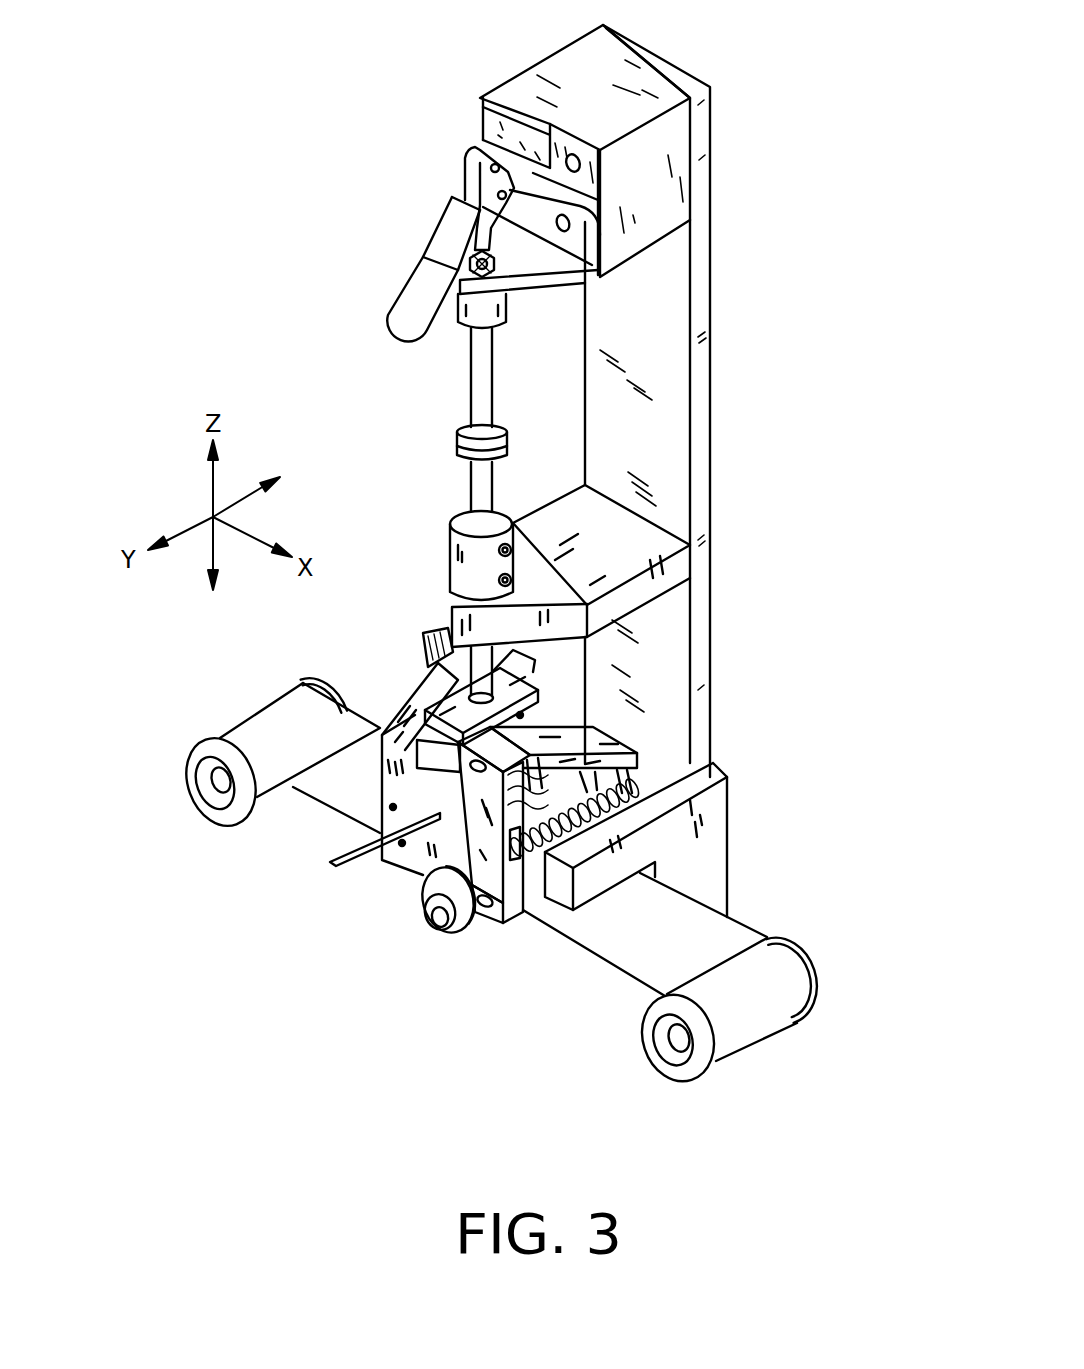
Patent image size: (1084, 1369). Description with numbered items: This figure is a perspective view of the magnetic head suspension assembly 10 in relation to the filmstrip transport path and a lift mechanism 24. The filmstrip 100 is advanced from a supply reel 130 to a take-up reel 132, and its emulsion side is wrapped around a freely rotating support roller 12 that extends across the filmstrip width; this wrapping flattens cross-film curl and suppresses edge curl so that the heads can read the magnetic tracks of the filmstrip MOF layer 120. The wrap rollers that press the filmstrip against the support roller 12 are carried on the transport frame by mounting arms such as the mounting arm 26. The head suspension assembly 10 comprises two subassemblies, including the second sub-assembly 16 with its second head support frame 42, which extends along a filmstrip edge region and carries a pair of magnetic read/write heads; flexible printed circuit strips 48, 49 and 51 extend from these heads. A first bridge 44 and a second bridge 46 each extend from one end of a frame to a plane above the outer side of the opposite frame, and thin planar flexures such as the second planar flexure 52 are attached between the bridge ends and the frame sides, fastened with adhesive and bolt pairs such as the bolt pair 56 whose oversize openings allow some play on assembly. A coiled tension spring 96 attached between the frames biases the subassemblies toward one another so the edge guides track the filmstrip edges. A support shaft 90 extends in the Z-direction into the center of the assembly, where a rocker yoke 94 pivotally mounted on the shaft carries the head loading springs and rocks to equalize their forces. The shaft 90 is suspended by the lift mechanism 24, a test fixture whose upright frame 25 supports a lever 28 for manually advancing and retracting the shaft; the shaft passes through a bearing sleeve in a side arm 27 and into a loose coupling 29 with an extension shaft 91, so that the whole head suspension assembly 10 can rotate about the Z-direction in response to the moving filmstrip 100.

The magnetic head suspension assembly 10 is at (372, 701).
The support roller 12 is at (448, 935).
The second sub-assembly 16 is at (513, 975).
The lift mechanism 24 is at (822, 378).
The upright frame 25 is at (710, 320).
The mounting arm 26 is at (730, 837).
The side arm 27 is at (672, 597).
The lever 28 is at (398, 288).
The loose coupling 29 is at (450, 553).
The second head support frame 42 is at (407, 870).
The first bridge 44 is at (615, 737).
The second bridge 46 is at (420, 693).
The flexible printed circuit strip 48 is at (440, 630).
The flexible printed circuit strip 49 is at (330, 860).
The flexible printed circuit strip 51 is at (620, 762).
The second planar flexure 52 is at (515, 887).
The bolt pair 56 is at (500, 920).
The support shaft 90 is at (423, 640).
The extension shaft 91 is at (460, 483).
The rocker yoke 94 is at (540, 700).
The tension spring 96 is at (638, 818).
The filmstrip 100 is at (620, 1002).
The filmstrip MOF layer 120 is at (745, 932).
The supply reel 130 is at (207, 817).
The take-up reel 132 is at (813, 970).